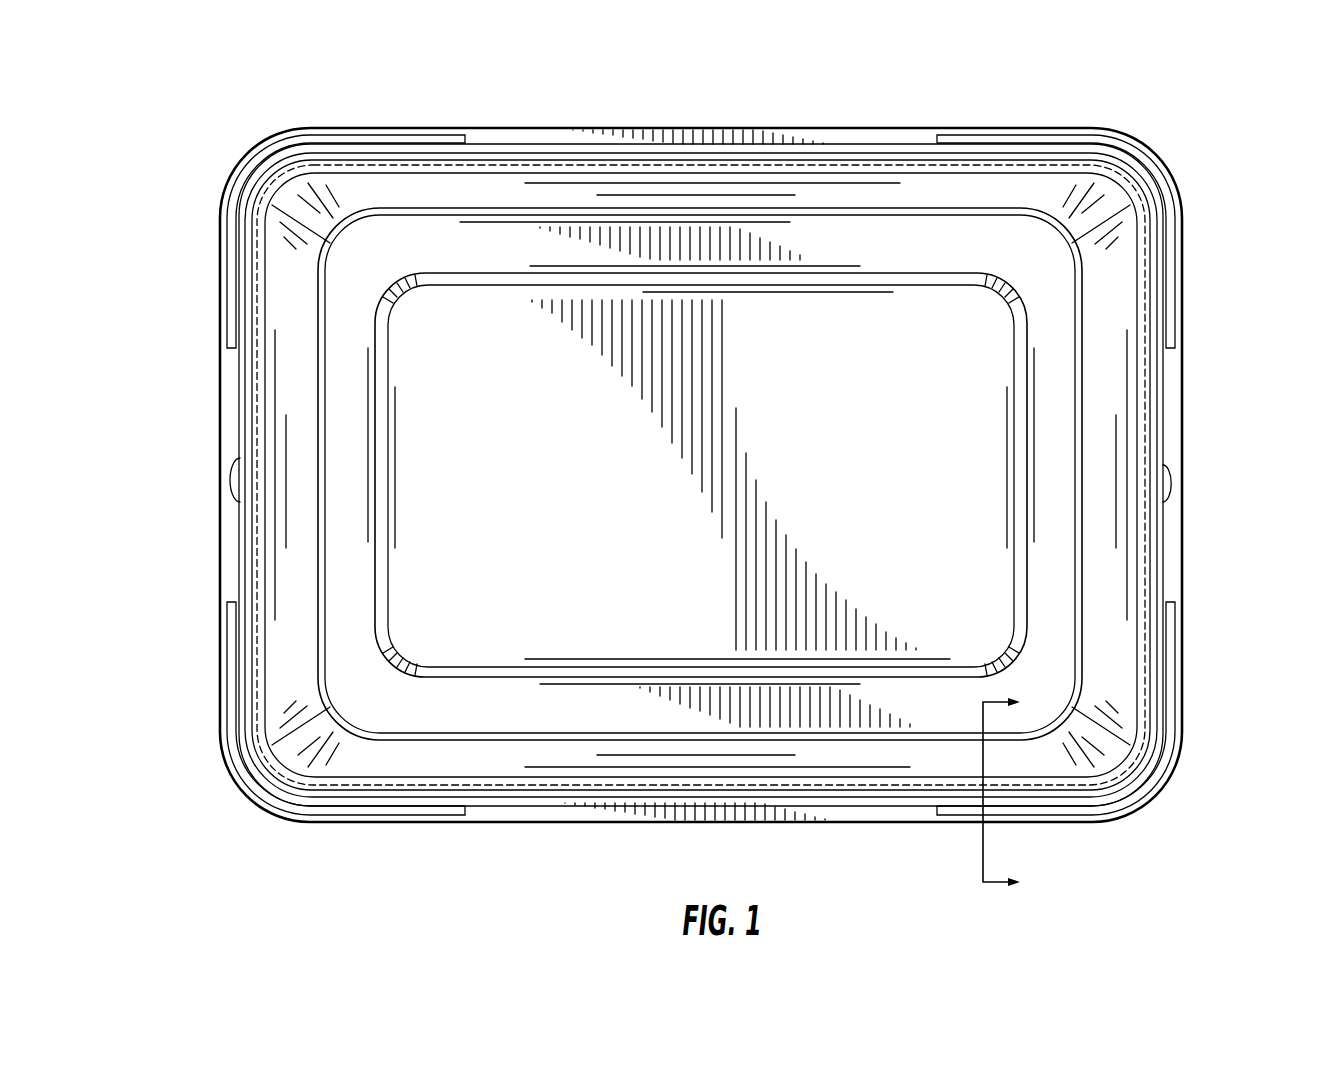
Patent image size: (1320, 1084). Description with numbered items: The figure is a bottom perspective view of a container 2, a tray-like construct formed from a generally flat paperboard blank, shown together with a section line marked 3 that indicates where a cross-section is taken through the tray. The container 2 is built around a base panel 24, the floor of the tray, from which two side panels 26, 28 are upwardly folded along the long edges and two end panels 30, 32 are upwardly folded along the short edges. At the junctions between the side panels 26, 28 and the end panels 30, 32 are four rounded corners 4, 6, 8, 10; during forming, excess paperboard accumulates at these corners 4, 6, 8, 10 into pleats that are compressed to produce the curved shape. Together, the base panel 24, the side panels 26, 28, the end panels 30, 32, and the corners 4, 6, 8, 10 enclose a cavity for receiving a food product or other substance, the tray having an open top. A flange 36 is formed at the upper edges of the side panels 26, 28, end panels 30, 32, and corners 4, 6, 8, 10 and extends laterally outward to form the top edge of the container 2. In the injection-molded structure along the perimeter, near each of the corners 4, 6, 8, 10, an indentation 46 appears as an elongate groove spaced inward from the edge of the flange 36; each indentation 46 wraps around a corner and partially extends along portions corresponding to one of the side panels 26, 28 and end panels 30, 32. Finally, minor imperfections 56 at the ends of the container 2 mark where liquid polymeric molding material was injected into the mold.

The container 2 is at (997, 134).
The rounded corner 4 is at (1103, 196).
The rounded corner 6 is at (1109, 742).
The rounded corner 8 is at (294, 741).
The rounded corner 10 is at (300, 203).
The base panel 24 is at (587, 507).
The side panel 26 is at (498, 200).
The side panel 28 is at (626, 756).
The end panel 30 is at (298, 558).
The end panel 32 is at (1114, 452).
The flange 36 is at (872, 138).
The indentation 46 is at (330, 138).
The minor imperfection 56 is at (233, 478).
The section line 3- 3 is at (1014, 791).